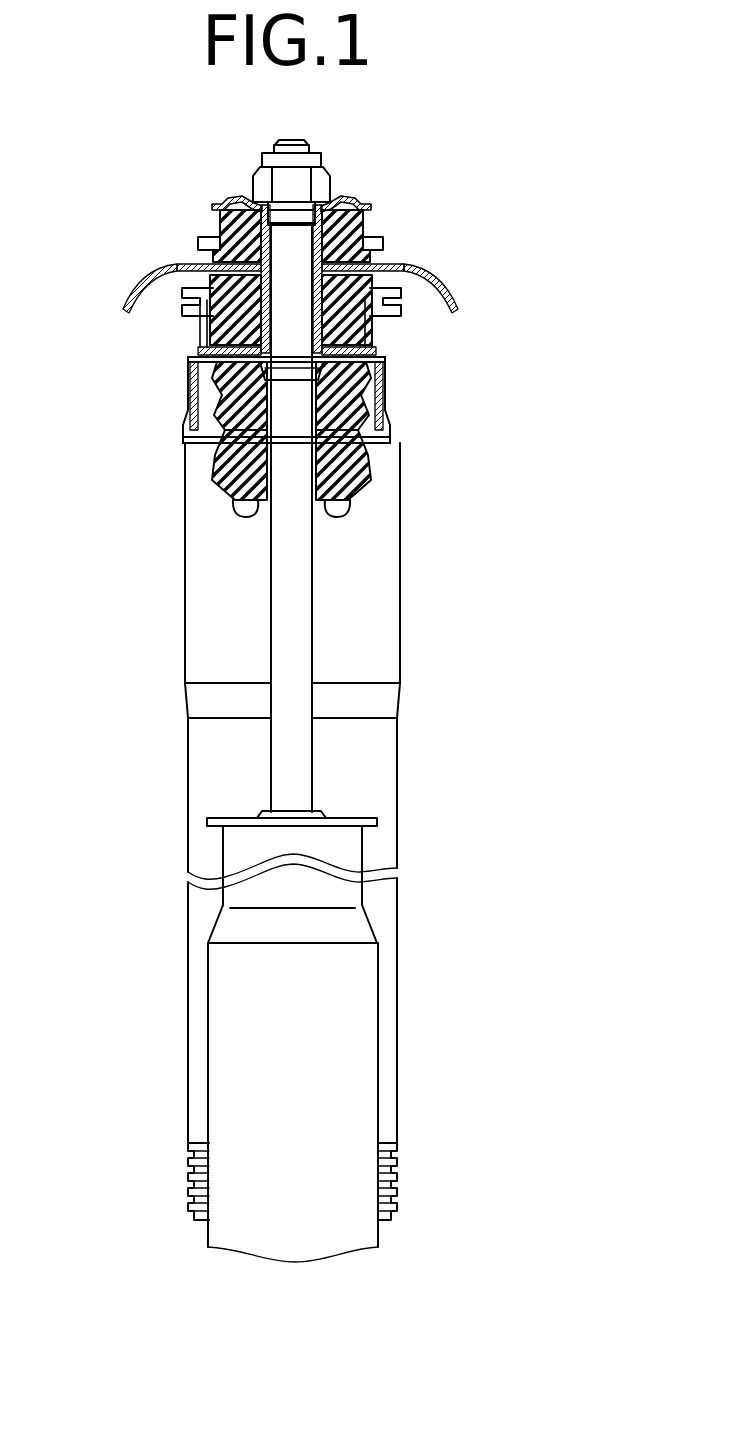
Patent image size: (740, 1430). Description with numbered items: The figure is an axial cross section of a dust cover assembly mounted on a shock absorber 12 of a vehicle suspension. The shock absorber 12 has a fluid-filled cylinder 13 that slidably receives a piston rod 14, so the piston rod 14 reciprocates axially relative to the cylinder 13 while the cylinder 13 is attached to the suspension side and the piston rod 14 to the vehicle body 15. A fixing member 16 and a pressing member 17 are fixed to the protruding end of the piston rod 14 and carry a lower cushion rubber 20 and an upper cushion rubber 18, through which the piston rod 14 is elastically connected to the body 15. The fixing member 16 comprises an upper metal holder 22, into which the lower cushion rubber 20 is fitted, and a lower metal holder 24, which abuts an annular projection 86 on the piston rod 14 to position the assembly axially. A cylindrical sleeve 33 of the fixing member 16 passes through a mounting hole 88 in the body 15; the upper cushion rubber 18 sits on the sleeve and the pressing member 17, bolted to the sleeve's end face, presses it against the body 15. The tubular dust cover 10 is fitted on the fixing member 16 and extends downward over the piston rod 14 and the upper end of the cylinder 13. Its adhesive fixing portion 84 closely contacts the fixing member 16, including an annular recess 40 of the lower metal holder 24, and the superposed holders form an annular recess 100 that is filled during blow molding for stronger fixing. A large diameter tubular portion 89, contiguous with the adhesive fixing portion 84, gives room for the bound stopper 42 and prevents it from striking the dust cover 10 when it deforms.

The dust cover 10 is at (410, 566).
The shock absorber 12 is at (358, 787).
The cylinder 13 is at (235, 1090).
The piston rod 14 is at (290, 650).
The body 15 is at (430, 282).
The fixing member 16 is at (86, 360).
The pressing member 17 is at (240, 198).
The upper cushion rubber 18 is at (226, 224).
The lower cushion rubber 20 is at (360, 328).
The upper metal holder 22 is at (202, 334).
The lower metal holder 24 is at (190, 385).
The cylindrical sleeve 33 is at (343, 240).
The annular recess 40 is at (383, 388).
The bound stopper 42 is at (222, 488).
The adhesive fixing portion 84 is at (382, 350).
The annular projection 86 is at (290, 370).
The mounting hole 88 is at (200, 318).
The large diameter tubular portion 89 is at (184, 592).
The annular recess 100 is at (392, 342).